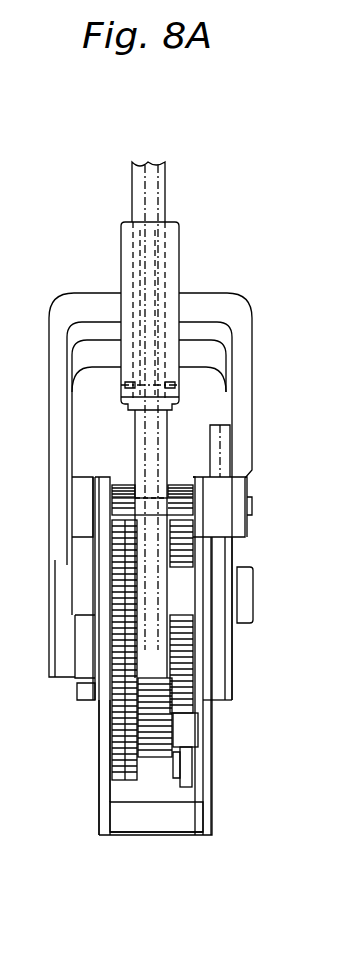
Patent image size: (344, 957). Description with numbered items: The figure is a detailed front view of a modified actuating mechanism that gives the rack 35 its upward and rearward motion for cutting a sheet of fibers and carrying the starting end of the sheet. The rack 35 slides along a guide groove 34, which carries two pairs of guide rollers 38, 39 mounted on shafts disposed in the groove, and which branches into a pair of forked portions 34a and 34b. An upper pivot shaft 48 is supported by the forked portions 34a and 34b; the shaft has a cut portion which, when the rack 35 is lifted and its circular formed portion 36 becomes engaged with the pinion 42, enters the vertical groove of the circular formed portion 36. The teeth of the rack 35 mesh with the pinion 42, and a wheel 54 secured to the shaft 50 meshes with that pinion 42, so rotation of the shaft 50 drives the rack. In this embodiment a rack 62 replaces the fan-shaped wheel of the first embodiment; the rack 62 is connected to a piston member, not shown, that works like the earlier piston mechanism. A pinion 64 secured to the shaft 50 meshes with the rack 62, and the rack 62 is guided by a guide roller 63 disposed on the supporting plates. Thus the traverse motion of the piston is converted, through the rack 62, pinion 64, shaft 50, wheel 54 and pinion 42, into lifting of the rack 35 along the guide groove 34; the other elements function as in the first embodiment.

The guide groove 34 is at (179, 272).
The forked portion 34a is at (252, 403).
The forked portion 34b is at (52, 410).
The rack 35 is at (155, 183).
The circular formed portion 36 is at (158, 757).
The guide roller 38 is at (132, 232).
The guide roller 39 is at (127, 385).
The pinion 42 is at (110, 545).
The upper pivot shaft 48 is at (182, 490).
The shaft 50 is at (233, 665).
The wheel 54 is at (110, 760).
The rack 62 is at (188, 732).
The guide roller 63 is at (192, 785).
The pinion 64 is at (186, 712).